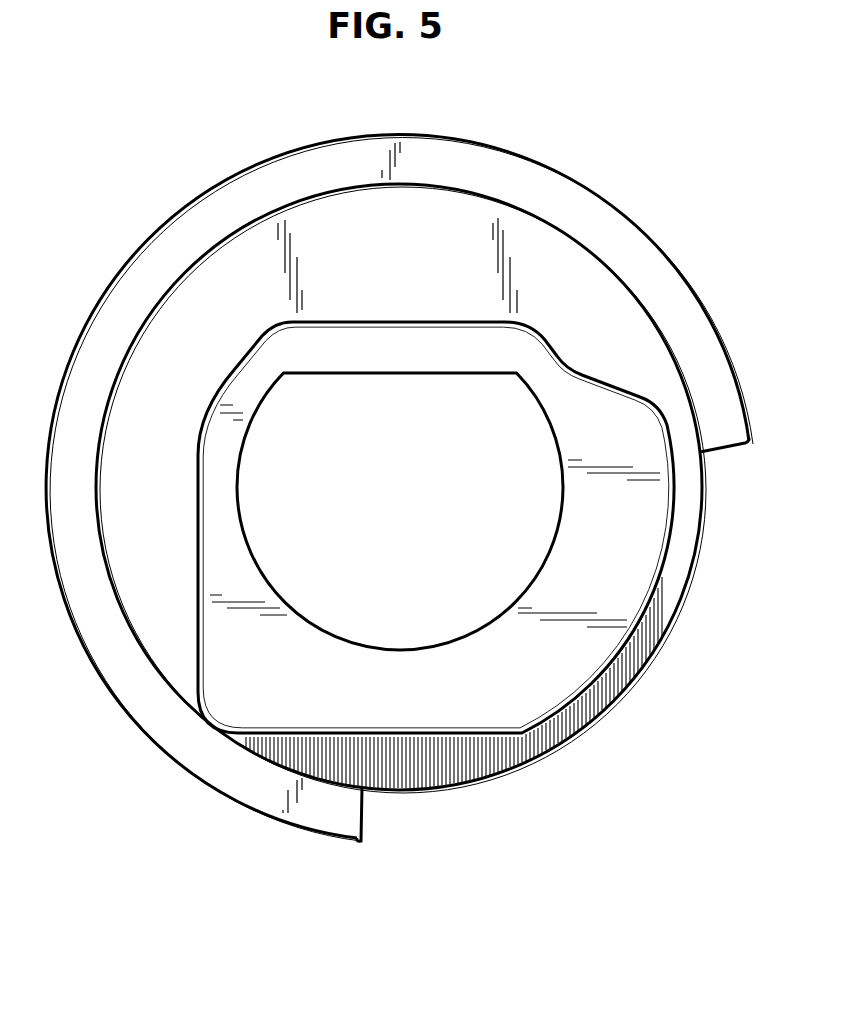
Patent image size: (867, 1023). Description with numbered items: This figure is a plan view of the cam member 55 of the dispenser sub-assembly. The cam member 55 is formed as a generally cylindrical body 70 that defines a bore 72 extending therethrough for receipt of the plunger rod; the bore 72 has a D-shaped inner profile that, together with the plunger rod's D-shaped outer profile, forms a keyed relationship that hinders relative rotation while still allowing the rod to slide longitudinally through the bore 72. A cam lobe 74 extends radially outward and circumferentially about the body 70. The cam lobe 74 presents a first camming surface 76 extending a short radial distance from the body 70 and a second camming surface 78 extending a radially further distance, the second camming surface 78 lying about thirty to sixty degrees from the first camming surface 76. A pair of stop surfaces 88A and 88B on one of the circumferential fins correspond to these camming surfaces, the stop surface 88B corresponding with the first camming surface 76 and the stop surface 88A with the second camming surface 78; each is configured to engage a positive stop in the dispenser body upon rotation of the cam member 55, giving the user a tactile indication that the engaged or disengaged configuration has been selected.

The cam member 55 is at (114, 751).
The cam member body 70 is at (371, 308).
The bore 72 is at (409, 515).
The cam lobe 74 is at (632, 543).
The first camming surface 76 is at (450, 736).
The second camming surface 78 is at (652, 603).
The stop surface 88A is at (721, 453).
The stop surface 88B is at (364, 811).